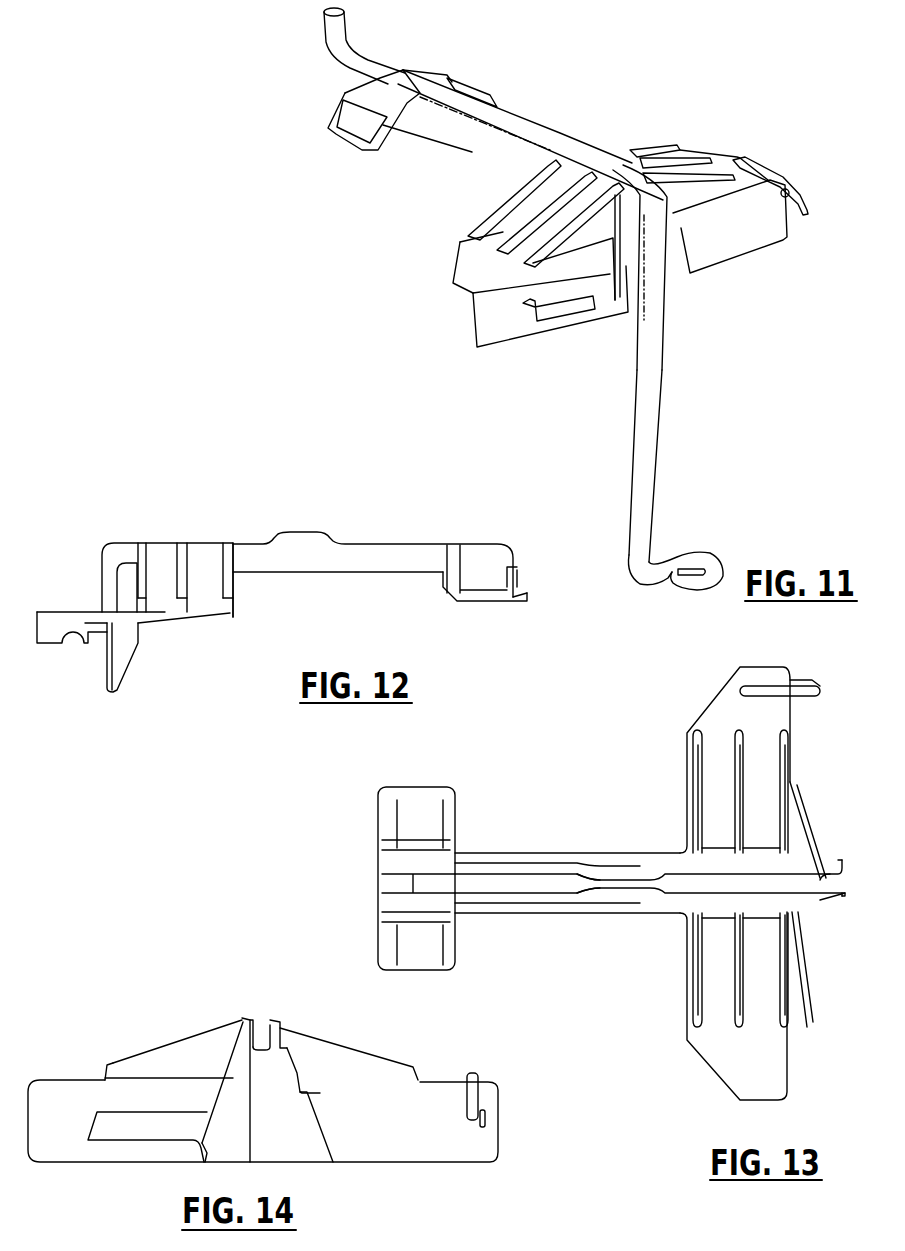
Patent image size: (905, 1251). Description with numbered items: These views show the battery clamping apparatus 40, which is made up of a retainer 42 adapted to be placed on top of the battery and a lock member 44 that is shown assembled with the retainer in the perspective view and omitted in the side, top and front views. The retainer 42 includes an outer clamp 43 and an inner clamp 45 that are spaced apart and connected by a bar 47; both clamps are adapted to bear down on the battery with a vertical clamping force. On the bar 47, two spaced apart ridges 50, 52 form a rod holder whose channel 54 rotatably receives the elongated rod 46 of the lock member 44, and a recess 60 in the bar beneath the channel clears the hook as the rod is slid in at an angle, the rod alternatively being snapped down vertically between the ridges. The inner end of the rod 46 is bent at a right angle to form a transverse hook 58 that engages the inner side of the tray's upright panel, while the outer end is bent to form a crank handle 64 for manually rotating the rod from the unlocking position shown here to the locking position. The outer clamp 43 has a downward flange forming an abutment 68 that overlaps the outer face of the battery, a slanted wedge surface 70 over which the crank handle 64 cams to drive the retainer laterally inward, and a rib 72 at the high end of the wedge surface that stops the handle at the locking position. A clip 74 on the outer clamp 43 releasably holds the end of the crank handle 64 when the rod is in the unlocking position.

In FIG. 11, the clamping apparatus 40 is at (592, 115).
In FIG. 11, the retainer 42 is at (612, 146).
In FIG. 12, the retainer 42 is at (357, 535).
In FIG. 13, the retainer 42 is at (519, 830).
In FIG. 14, the retainer 42 is at (432, 1055).
In FIG. 11, the outer clamp 43 is at (467, 265).
In FIG. 12, the outer clamp 43 is at (165, 555).
In FIG. 13, the outer clamp 43 is at (777, 1082).
In FIG. 11, the lock member 44 is at (680, 458).
In FIG. 11, the inner clamp 45 is at (332, 142).
In FIG. 12, the inner clamp 45 is at (500, 597).
In FIG. 13, the inner clamp 45 is at (425, 808).
In FIG. 11, the rod 46 is at (372, 55).
In FIG. 11, the bar 47 is at (440, 140).
In FIG. 12, the bar 47 is at (318, 570).
In FIG. 13, the bar 47 is at (553, 853).
In FIG. 11, the ridge 50 is at (508, 133).
In FIG. 13, the ridge 50 is at (620, 897).
In FIG. 14, the ridge 50 is at (242, 1018).
In FIG. 11, the ridge 52 is at (548, 127).
In FIG. 13, the ridge 52 is at (617, 870).
In FIG. 14, the ridge 52 is at (280, 1018).
In FIG. 14, the channel 54 is at (263, 1023).
In FIG. 11, the transverse hook 58 is at (330, 27).
In FIG. 13, the recess 60 is at (603, 887).
In FIG. 11, the crank handle 64 is at (648, 433).
In FIG. 11, the abutment 68 is at (492, 320).
In FIG. 12, the abutment 68 is at (128, 660).
In FIG. 14, the abutment 68 is at (47, 1148).
In FIG. 11, the wedge surface 70 is at (673, 277).
In FIG. 13, the wedge surface 70 is at (810, 857).
In FIG. 14, the wedge surface 70 is at (280, 1147).
In FIG. 13, the rib 72 is at (840, 883).
In FIG. 14, the rib 72 is at (230, 1075).
In FIG. 11, the clip 74 is at (805, 190).
In FIG. 12, the clip 74 is at (50, 625).
In FIG. 13, the clip 74 is at (813, 687).
In FIG. 14, the clip 74 is at (480, 1103).